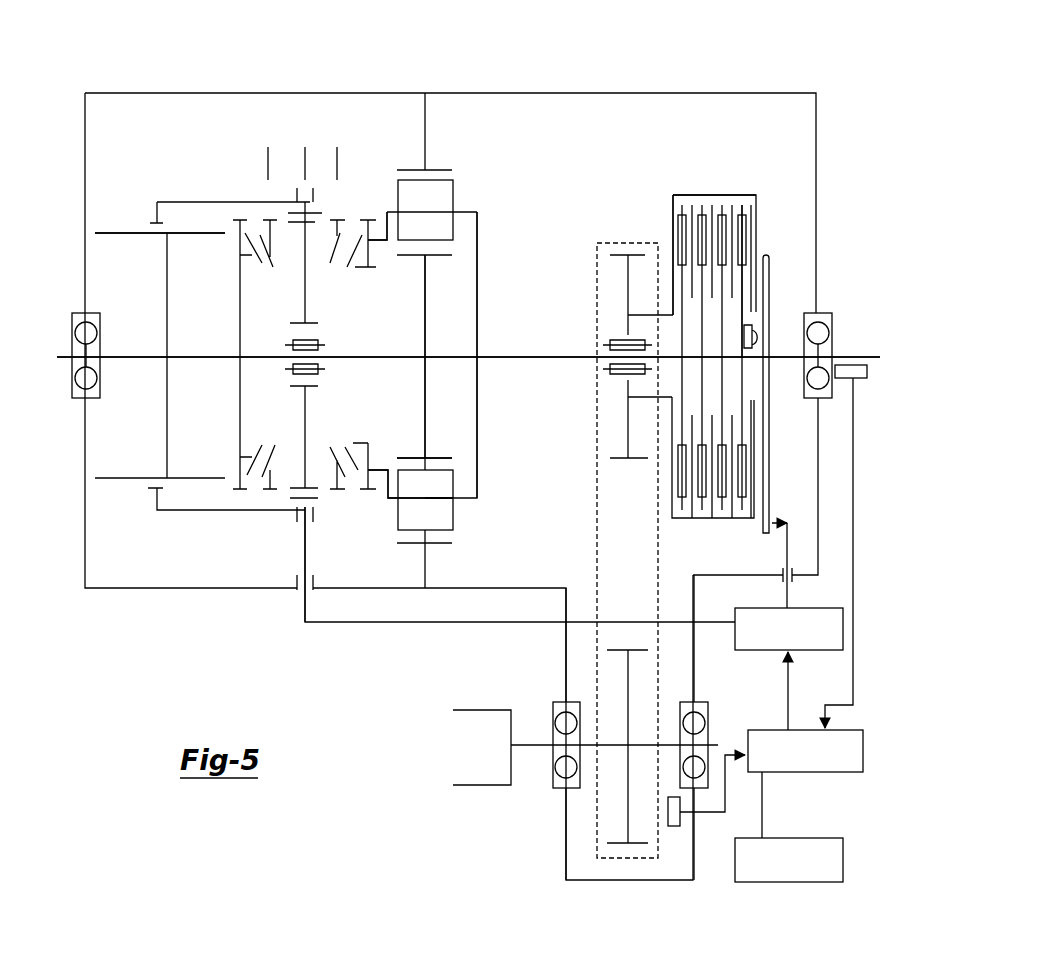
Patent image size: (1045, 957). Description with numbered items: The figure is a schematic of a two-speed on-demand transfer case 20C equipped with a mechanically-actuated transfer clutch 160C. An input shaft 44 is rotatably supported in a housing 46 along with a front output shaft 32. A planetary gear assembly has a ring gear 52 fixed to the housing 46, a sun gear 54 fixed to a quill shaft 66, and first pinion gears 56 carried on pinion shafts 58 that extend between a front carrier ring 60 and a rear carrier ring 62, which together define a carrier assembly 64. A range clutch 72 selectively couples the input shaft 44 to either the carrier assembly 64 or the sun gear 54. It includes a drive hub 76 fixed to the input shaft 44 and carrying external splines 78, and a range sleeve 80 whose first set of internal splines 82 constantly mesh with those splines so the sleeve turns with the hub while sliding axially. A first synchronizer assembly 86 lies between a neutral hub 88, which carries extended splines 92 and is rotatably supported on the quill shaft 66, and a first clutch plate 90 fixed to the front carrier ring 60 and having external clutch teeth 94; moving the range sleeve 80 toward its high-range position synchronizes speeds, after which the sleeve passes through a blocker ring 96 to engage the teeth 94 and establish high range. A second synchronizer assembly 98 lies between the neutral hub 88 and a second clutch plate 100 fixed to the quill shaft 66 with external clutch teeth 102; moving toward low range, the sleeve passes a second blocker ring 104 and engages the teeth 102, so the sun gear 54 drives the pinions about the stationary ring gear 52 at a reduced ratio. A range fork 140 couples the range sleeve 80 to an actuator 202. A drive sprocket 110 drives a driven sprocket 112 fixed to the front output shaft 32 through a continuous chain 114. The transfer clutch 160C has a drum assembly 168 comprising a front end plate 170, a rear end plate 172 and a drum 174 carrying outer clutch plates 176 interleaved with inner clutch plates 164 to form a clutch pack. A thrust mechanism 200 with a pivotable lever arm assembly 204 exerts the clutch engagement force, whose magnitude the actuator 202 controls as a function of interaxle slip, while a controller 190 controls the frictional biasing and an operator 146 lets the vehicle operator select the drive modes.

The transfer case 20C is at (700, 68).
The housing 46 is at (800, 93).
The input shaft 44 is at (62, 355).
The drive hub 76 is at (167, 310).
The external splines 78 is at (125, 233).
The first set of internal splines 82 is at (150, 223).
The range sleeve 80 is at (262, 203).
The extended splines 92 is at (315, 222).
The neutral hub 88 is at (305, 268).
The second clutch plate 100 is at (263, 332).
The second blocker ring 104 is at (272, 237).
The first clutch plate 90 is at (366, 262).
The second synchronizer assembly 98 is at (267, 437).
The blocker ring 96 is at (333, 477).
The external clutch teeth 94 is at (367, 493).
The first synchronizer assembly 86 is at (372, 437).
The range fork 140 is at (305, 547).
The external clutch teeth 102 is at (242, 512).
The range clutch 72 is at (282, 530).
The ring gear 52 is at (442, 165).
The first pinion gears 56 is at (438, 193).
The pinion shaft 58 is at (460, 210).
The carrier assembly 64 is at (477, 208).
The rear carrier ring 62 is at (477, 222).
The front carrier ring 60 is at (385, 213).
The sun gear 54 is at (423, 315).
The quill shaft 66 is at (363, 357).
The continuous chain 114 is at (597, 545).
The drive sprocket 110 is at (600, 303).
The inner clutch plates 164 is at (683, 427).
The driven sprocket 112 is at (630, 673).
The front output shaft 32 is at (528, 747).
The drum 174 is at (675, 827).
The transfer clutch 160C is at (748, 127).
The drum assembly 168 is at (700, 193).
The front end plate 170 is at (672, 223).
The outer clutch plates 176 is at (737, 202).
The rear end plate 172 is at (758, 235).
The thrust mechanism 200 is at (773, 303).
The lever arm assembly 204 is at (797, 498).
The actuator 202 is at (815, 650).
The controller 190 is at (820, 772).
The operator 146 is at (843, 865).